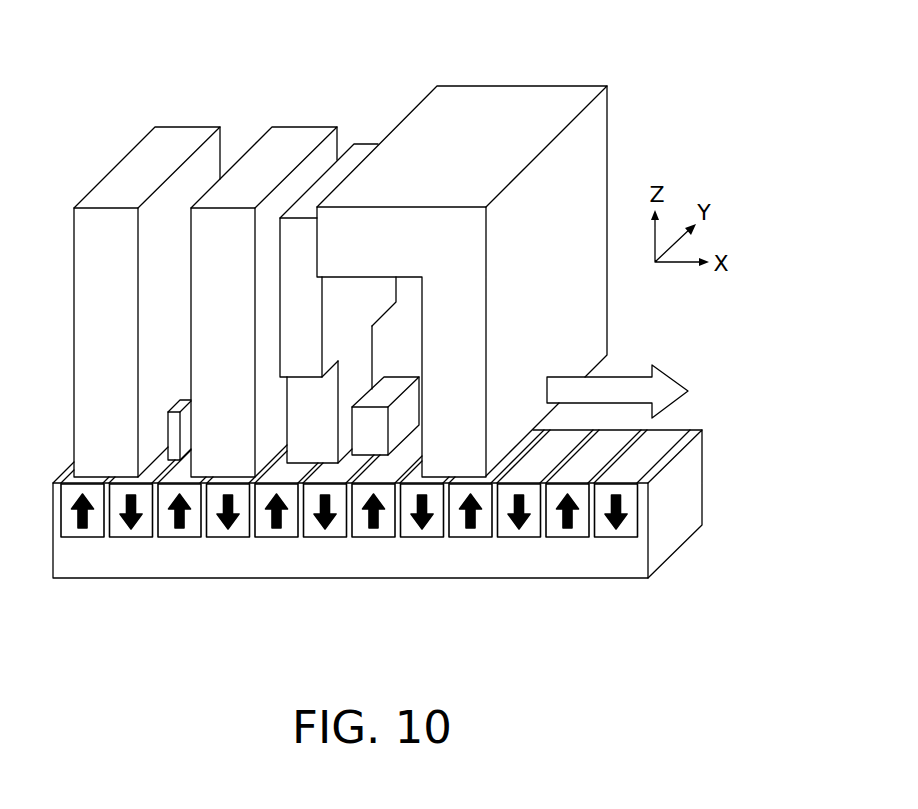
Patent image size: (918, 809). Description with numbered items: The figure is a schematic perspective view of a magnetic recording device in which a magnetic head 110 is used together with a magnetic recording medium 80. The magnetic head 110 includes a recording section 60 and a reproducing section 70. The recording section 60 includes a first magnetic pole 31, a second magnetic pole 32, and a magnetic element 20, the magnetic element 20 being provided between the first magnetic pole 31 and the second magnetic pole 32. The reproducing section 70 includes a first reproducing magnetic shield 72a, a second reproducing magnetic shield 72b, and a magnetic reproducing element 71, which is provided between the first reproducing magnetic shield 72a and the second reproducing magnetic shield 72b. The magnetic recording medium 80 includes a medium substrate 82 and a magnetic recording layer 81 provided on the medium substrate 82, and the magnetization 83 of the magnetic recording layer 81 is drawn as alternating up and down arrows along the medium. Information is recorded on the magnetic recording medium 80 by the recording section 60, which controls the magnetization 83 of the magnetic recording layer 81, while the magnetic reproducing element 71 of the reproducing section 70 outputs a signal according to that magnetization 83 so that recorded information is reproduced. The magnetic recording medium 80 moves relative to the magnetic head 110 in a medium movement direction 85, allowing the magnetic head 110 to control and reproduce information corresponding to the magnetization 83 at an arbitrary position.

The magnetic head 110 is at (640, 110).
The reproducing section 70 is at (172, 72).
The first reproducing magnetic shield 72a is at (173, 143).
The magnetic reproducing element 71 is at (173, 405).
The second reproducing magnetic shield 72b is at (290, 143).
The recording section 60 is at (450, 652).
The first magnetic pole 31 is at (318, 450).
The magnetic element 20 is at (370, 436).
The second magnetic pole 32 is at (460, 452).
The magnetic recording medium 80 is at (142, 634).
The magnetic recording layer 81 is at (78, 540).
The medium substrate 82 is at (122, 553).
The magnetization 83 is at (178, 528).
The medium movement direction 85 is at (628, 385).